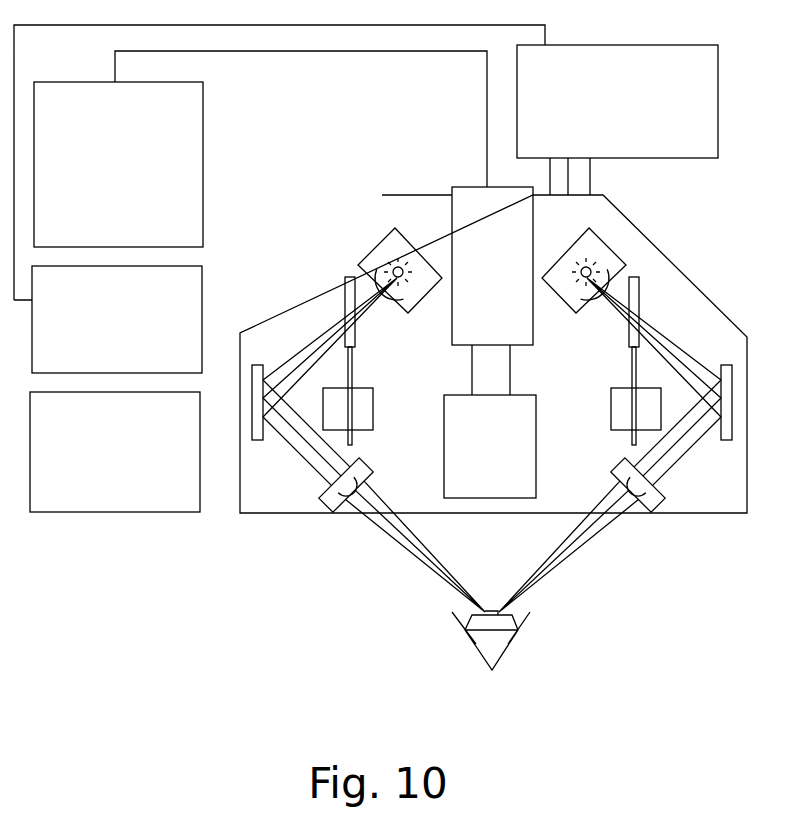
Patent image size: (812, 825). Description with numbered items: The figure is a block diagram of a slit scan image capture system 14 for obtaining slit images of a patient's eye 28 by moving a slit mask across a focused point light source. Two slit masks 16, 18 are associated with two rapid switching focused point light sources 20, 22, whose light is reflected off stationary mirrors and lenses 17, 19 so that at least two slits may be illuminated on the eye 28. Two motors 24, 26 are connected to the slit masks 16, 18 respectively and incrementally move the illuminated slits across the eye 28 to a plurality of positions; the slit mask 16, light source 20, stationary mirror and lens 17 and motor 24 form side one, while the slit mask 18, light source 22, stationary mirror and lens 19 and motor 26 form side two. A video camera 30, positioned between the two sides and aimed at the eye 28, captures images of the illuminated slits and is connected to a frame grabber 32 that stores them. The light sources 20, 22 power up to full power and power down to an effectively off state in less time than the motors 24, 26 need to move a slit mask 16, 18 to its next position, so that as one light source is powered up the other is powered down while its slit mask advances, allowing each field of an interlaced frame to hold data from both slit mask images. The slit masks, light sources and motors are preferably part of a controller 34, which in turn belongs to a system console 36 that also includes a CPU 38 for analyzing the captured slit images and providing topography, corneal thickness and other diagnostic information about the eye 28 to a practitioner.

The slit scan image capture system 14 is at (420, 195).
The slit mask 16 is at (343, 293).
The stationary mirror and lens 17 is at (328, 503).
The slit mask 18 is at (641, 293).
The stationary mirror and lens 19 is at (656, 503).
The rapid switching focused point light source 20 is at (377, 247).
The rapid switching focused point light source 22 is at (613, 248).
The motor 24 is at (324, 388).
The motor 26 is at (660, 388).
The eye 28 is at (500, 648).
The video camera 30 is at (490, 342).
The frame grabber 32 is at (118, 164).
The controller 34 is at (617, 101).
The system console 36 is at (117, 319).
The CPU 38 is at (115, 452).